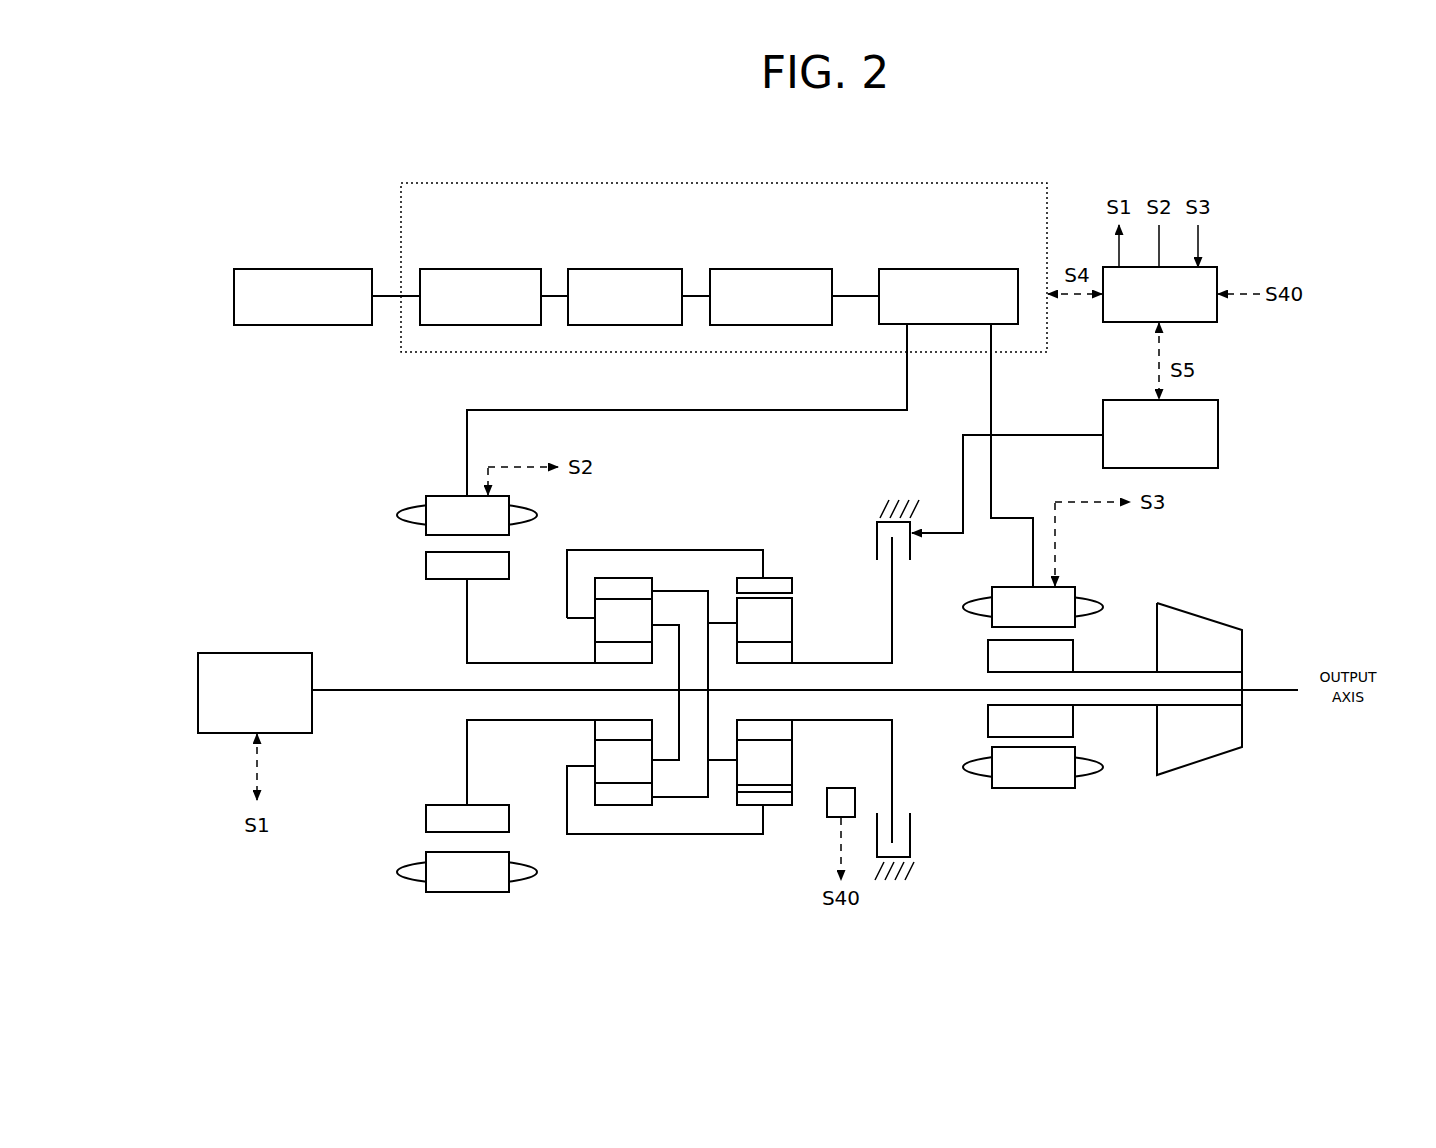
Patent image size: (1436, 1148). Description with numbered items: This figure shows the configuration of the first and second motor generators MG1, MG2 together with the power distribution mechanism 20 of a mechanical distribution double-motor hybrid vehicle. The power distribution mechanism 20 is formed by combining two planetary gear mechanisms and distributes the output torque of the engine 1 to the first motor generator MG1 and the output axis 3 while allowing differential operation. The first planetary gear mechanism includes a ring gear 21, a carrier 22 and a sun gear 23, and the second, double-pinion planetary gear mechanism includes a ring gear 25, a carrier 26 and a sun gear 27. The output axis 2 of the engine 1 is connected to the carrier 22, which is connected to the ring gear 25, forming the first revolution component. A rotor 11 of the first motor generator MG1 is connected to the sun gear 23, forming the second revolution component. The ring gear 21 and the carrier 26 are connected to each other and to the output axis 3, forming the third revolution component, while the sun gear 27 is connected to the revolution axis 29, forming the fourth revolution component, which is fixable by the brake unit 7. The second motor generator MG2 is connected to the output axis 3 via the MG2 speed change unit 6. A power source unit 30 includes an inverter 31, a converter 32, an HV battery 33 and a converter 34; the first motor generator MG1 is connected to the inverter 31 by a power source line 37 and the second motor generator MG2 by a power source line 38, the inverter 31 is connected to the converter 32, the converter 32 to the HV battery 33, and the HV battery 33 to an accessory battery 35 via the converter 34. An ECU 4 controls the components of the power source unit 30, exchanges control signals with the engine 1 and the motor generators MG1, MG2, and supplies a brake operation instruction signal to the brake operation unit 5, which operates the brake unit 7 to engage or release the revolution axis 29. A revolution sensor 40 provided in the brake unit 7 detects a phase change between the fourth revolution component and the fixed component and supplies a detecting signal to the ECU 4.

The engine 1 is at (260, 653).
The output axis of the engine 2 is at (357, 691).
The output axis 3 is at (1270, 691).
The ECU 4 is at (1217, 273).
The brake operation unit 5 is at (1218, 425).
The MG2 speed change unit 6 is at (1208, 616).
The brake unit 7 is at (911, 845).
The rotor of the first motor generator 11 is at (443, 580).
The power distribution mechanism 20 is at (686, 681).
The ring gear 21 is at (630, 578).
The carrier 22 is at (595, 629).
The sun gear 23 is at (595, 650).
The ring gear 25 is at (775, 578).
The carrier 26 is at (792, 614).
The sun gear 27 is at (793, 650).
The revolution axis 29 is at (868, 663).
The power source unit 30 is at (914, 183).
The inverter 31 is at (983, 269).
The converter 32 is at (802, 269).
The HV battery 33 is at (661, 269).
The converter 34 is at (516, 269).
The accessory battery 35 is at (352, 269).
The power source line 37 is at (802, 411).
The power source line 38 is at (992, 381).
The revolution sensor 40 is at (843, 788).
The first motor generator MG1 is at (386, 508).
The second motor generator MG2 is at (1082, 578).